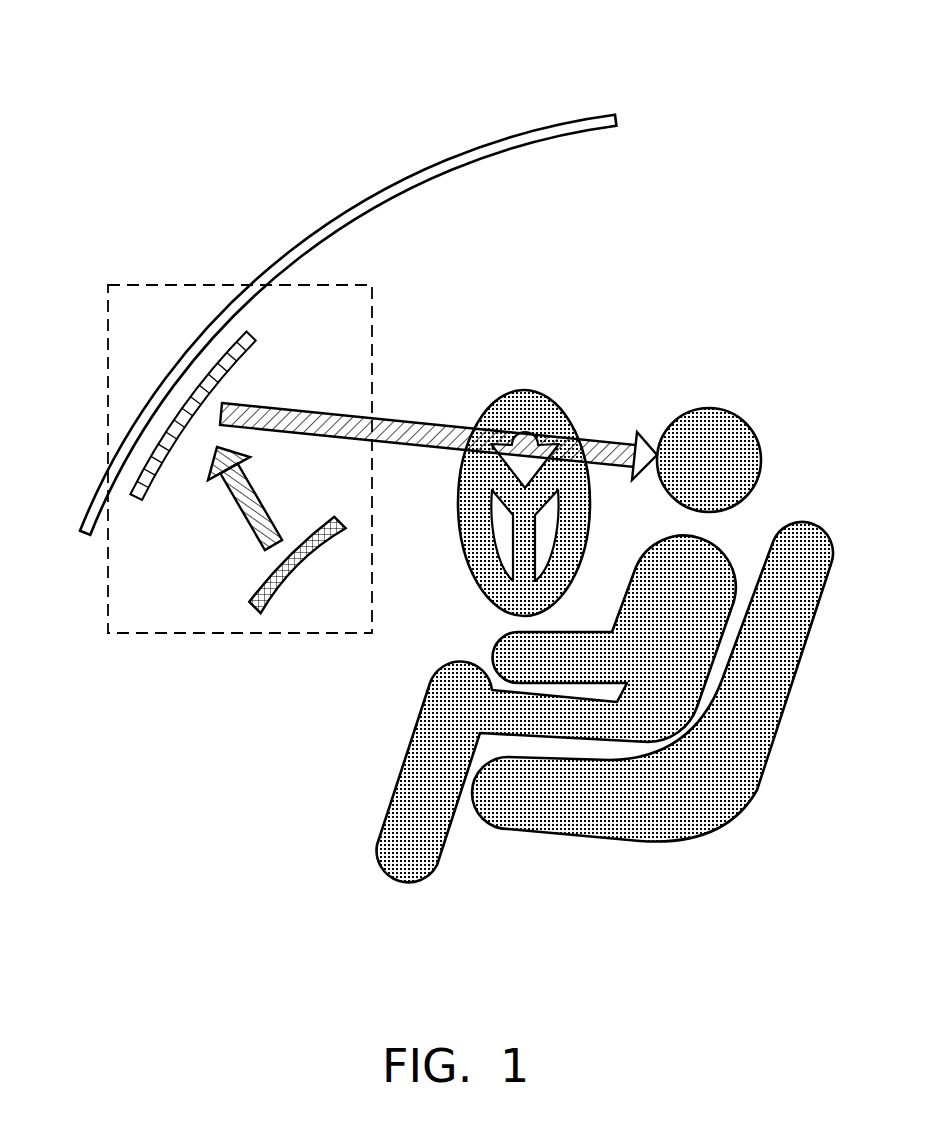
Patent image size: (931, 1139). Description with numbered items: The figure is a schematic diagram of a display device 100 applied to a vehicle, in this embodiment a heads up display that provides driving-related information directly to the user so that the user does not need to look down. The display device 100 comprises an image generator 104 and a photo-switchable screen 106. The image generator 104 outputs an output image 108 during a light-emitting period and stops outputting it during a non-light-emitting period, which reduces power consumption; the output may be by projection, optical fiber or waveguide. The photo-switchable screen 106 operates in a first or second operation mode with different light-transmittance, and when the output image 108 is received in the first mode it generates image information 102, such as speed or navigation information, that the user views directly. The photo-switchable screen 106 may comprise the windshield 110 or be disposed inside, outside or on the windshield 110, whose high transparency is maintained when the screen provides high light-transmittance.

The display device 100 is at (148, 282).
The image information 102 is at (417, 420).
The image generator 104 is at (290, 577).
The photo-switchable screen 106 is at (187, 407).
The output image 108 is at (233, 510).
The windshield 110 is at (477, 148).